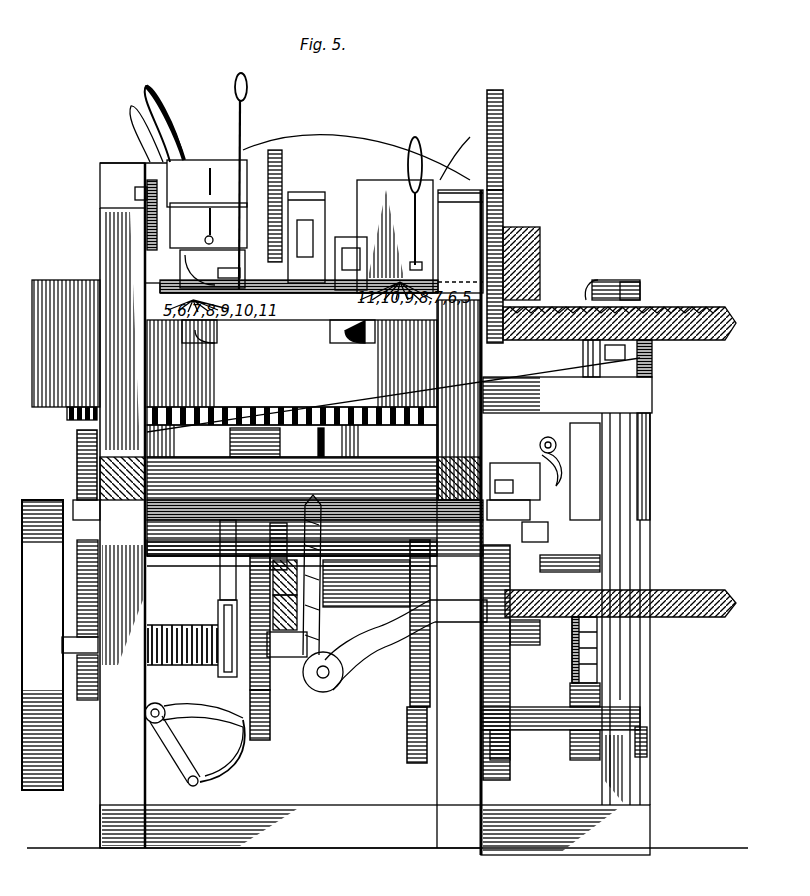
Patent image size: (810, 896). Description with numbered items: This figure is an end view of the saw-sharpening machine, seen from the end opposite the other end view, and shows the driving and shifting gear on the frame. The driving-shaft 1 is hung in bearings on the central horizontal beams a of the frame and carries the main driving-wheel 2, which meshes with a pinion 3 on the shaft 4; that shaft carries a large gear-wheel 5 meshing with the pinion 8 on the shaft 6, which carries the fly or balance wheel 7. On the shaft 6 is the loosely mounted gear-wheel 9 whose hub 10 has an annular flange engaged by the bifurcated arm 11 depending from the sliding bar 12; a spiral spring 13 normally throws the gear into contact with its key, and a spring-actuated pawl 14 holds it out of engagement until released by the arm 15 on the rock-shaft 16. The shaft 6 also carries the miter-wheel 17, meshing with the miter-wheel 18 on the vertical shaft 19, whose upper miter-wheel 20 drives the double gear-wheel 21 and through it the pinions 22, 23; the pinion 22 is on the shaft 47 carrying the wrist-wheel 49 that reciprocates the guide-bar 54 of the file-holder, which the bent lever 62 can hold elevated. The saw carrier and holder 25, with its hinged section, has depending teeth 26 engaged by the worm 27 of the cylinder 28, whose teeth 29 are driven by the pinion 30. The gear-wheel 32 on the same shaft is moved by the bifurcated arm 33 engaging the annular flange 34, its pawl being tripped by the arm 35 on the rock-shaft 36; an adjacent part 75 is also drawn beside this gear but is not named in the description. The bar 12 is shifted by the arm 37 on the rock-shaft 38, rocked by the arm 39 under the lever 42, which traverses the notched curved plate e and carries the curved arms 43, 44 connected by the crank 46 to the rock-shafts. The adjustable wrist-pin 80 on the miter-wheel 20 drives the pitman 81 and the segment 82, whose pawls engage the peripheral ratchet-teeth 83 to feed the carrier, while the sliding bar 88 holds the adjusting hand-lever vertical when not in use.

The driving-shaft 1 is at (292, 546).
The main driving-wheel 2 is at (76, 459).
The pinion 3 is at (90, 700).
The shaft 4 is at (349, 640).
The large gear-wheel 5 is at (406, 736).
The shaft 6 is at (184, 598).
The fly or balance wheel 7 is at (42, 645).
The pinion 8 is at (408, 672).
The gear-wheel 9 is at (273, 723).
The hub 10 is at (218, 622).
The bifurcated arm 11 is at (220, 573).
The sliding bar 12 is at (313, 510).
The spiral spring 13 is at (182, 652).
The spring-actuated pawl 14 is at (253, 622).
The arm 15 is at (203, 713).
The rock-shaft 16 is at (157, 704).
The miter-wheel 17 is at (520, 662).
The miter-wheel 18 is at (692, 618).
The vertical shaft 19 is at (618, 514).
The miter-wheel 20 is at (610, 365).
The double gear-wheel 21 is at (541, 266).
The pinion 22 is at (505, 199).
The pinion 23 is at (505, 105).
The saw carrier and holder 25 is at (66, 343).
The depending teeth 26 is at (68, 416).
The worm 27 is at (331, 452).
The cylinder 28 is at (238, 442).
The teeth 29 is at (292, 452).
The pinion 30 is at (284, 583).
The gear-wheel 32 is at (548, 590).
The bifurcated arm 33 is at (535, 532).
The annular flange 34 is at (519, 482).
The arm 35 is at (516, 477).
The rock-shaft 36 is at (550, 453).
The arm 37 is at (322, 602).
The rock-shaft 38 is at (318, 677).
The arm 39 is at (296, 610).
The lever 42 is at (152, 118).
The curved arm 43 is at (366, 584).
The curved arm 44 is at (228, 765).
The crank 46 is at (180, 752).
The shaft 47 is at (335, 206).
The wrist-wheel 49 is at (283, 178).
The guide-bar 54 is at (351, 263).
The bent lever 62 is at (244, 138).
The gear 75 is at (537, 632).
The adjustable wrist-pin 80 is at (637, 298).
The pitman 81 is at (600, 281).
The segment 82 is at (585, 471).
The peripheral ratchet-teeth 83 is at (588, 646).
The sliding bar 88 is at (645, 743).
The central horizontal beams a is at (288, 457).
The curved plate e is at (298, 150).